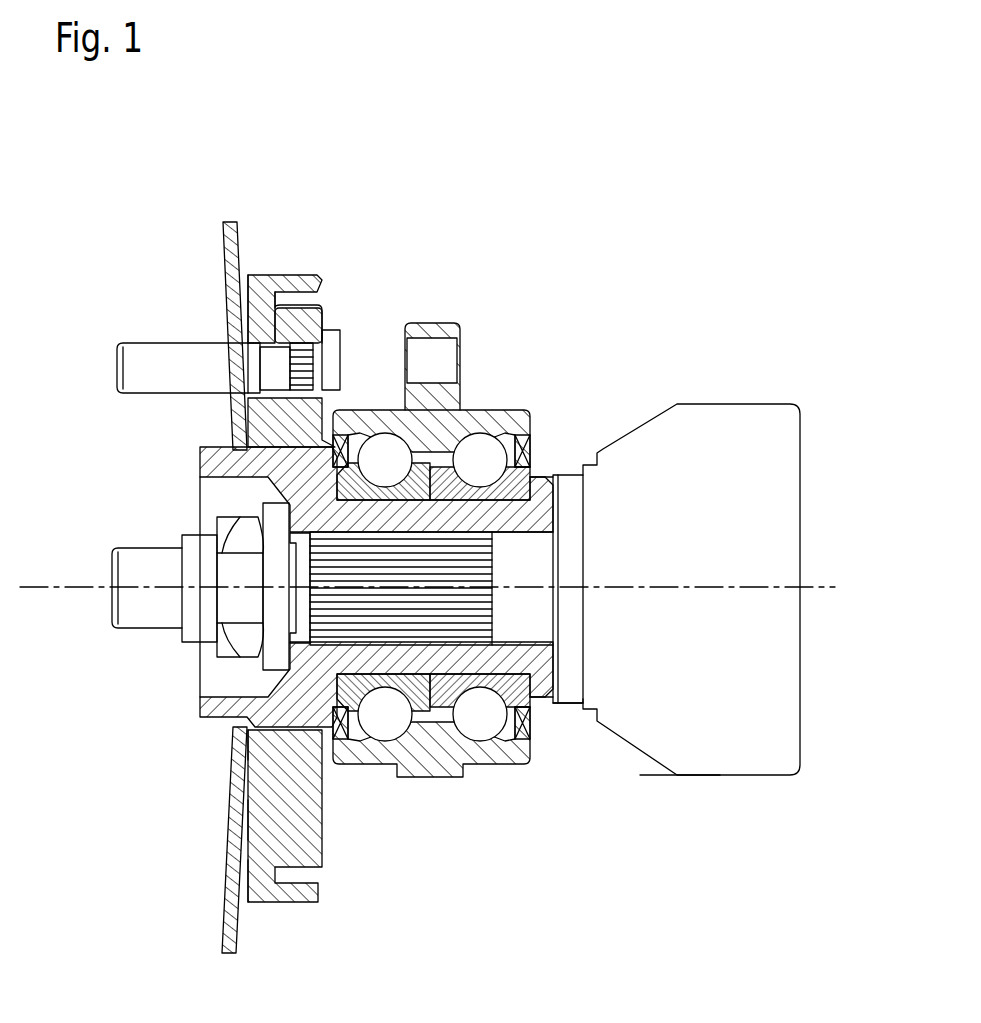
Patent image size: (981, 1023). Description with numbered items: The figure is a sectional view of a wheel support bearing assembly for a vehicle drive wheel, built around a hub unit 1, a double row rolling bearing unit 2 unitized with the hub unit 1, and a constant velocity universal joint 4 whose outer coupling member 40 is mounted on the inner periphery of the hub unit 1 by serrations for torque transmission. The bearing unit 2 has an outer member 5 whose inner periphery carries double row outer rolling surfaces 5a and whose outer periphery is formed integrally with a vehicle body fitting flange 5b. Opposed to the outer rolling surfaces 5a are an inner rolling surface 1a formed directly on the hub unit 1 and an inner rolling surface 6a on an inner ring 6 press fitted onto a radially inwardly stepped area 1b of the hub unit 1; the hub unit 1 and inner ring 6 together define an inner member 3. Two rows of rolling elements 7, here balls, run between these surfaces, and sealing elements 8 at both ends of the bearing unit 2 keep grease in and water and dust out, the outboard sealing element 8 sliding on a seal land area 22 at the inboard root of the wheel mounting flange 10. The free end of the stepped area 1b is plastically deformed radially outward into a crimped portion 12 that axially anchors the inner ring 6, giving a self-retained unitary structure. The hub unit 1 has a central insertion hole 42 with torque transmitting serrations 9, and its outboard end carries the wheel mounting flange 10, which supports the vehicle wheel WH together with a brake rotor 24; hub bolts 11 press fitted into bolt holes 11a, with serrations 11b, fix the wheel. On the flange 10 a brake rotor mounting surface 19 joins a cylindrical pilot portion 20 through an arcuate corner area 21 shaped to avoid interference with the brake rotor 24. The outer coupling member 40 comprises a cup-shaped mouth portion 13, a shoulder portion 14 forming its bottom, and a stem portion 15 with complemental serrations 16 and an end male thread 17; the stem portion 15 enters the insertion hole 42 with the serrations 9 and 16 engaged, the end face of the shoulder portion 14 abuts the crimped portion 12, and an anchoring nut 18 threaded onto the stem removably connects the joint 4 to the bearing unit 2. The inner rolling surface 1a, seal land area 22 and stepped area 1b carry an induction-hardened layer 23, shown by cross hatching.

The vehicle wheel WH is at (230, 232).
The hub unit 1 is at (265, 735).
The inner rolling surface 1a is at (297, 470).
The radially inwardly stepped area 1b is at (530, 513).
The double row rolling bearing unit 2 is at (400, 780).
The inner member 3 is at (146, 713).
The constant velocity universal joint 4 is at (738, 398).
The outer member 5 is at (437, 775).
The outer rolling surfaces 5a is at (378, 440).
The vehicle body fitting flange 5b is at (438, 330).
The inner ring 6 is at (260, 680).
The inner rolling surface 6a is at (520, 725).
The rolling elements 7 is at (375, 470).
The sealing elements 8 is at (343, 766).
The torque transmitting serrations 9 is at (320, 562).
The wheel mounting flange 10 is at (297, 320).
The hub bolts 11 is at (167, 357).
The bolt holes 11a is at (287, 358).
The serrations of hub bolts 11b is at (295, 380).
The crimped portion 12 is at (542, 508).
The mouth portion 13 is at (746, 758).
The shoulder portion 14 is at (570, 487).
The stem portion 15 is at (522, 568).
The complemental serrations 16 is at (300, 573).
The male thread 17 is at (125, 618).
The anchoring nut 18 is at (235, 571).
The brake rotor mounting surface 19 is at (265, 882).
The cylindrical pilot portion 20 is at (255, 757).
The corner area 21 is at (262, 830).
The seal land area 22 is at (355, 440).
The hardened layer 23 is at (560, 643).
The brake rotor 24 is at (257, 298).
The outer coupling member 40 is at (678, 780).
The insertion hole 42 is at (345, 598).